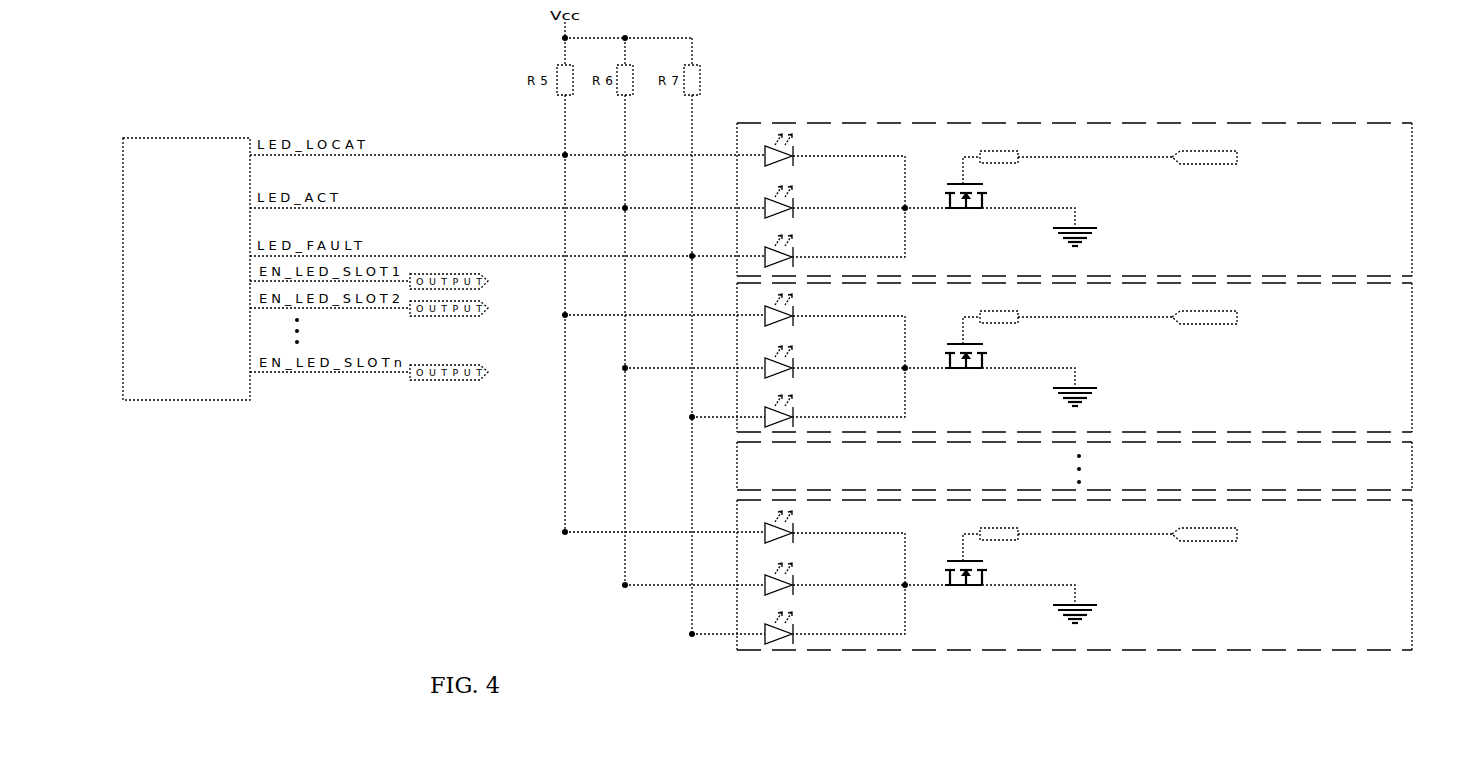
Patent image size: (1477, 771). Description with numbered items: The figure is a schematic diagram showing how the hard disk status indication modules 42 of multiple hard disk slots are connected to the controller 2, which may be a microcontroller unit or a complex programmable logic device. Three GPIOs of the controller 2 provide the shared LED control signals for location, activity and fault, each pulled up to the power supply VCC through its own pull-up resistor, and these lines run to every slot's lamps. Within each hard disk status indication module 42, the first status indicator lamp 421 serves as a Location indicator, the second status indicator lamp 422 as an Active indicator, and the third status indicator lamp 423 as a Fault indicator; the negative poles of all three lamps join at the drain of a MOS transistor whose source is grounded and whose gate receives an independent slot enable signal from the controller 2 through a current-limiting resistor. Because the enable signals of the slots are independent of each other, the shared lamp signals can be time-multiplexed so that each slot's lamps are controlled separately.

The controller 2 is at (176, 134).
The hard disk status indication module 42 is at (1355, 121).
The first status indicator lamp 421 is at (797, 139).
The second status indicator lamp 422 is at (799, 190).
The third status indicator lamp 423 is at (799, 242).